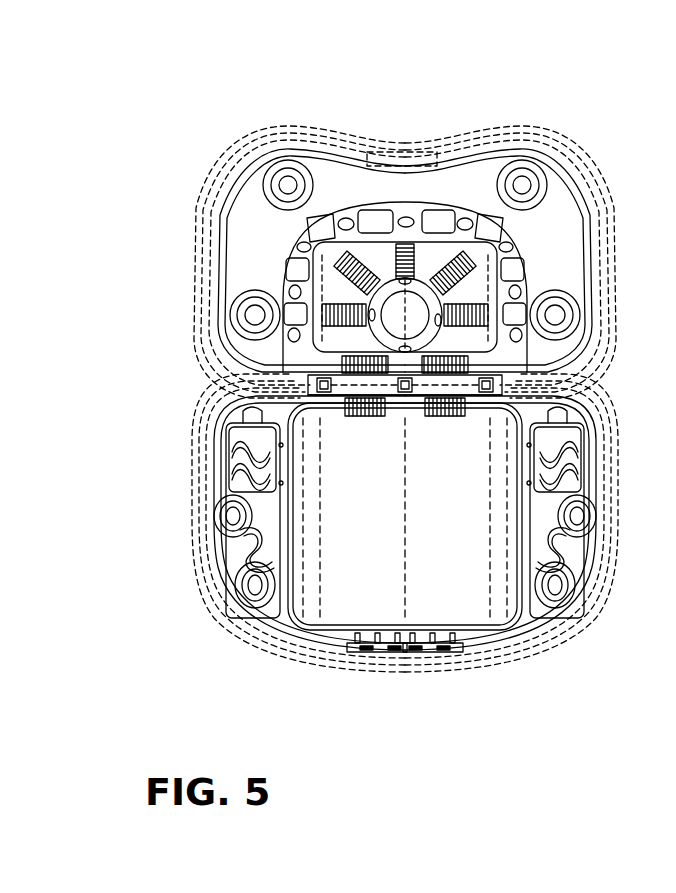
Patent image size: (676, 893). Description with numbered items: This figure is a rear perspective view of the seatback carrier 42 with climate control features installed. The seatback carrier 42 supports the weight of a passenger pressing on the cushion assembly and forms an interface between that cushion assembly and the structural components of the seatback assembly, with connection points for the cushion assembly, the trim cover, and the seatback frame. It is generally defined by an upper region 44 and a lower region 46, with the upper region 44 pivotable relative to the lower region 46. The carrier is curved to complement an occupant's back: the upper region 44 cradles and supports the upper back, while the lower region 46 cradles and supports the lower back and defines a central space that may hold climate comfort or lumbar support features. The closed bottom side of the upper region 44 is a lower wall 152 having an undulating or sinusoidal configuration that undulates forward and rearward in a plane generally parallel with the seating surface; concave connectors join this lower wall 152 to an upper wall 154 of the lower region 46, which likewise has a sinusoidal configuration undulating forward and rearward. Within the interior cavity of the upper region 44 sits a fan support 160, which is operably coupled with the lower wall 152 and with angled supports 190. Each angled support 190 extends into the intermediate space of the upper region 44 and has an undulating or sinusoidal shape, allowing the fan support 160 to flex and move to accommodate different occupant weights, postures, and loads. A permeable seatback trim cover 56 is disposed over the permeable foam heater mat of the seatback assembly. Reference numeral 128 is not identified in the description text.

The seatback carrier 42 is at (570, 197).
The permeable seatback trim cover 56 is at (250, 145).
The upper region 44 is at (265, 238).
The fan support 160 is at (412, 290).
The angled supports 190 is at (470, 276).
The lower wall 152 is at (500, 383).
The upper wall 154 is at (480, 403).
The lower region 46 is at (227, 543).
The central panel 128 is at (437, 532).